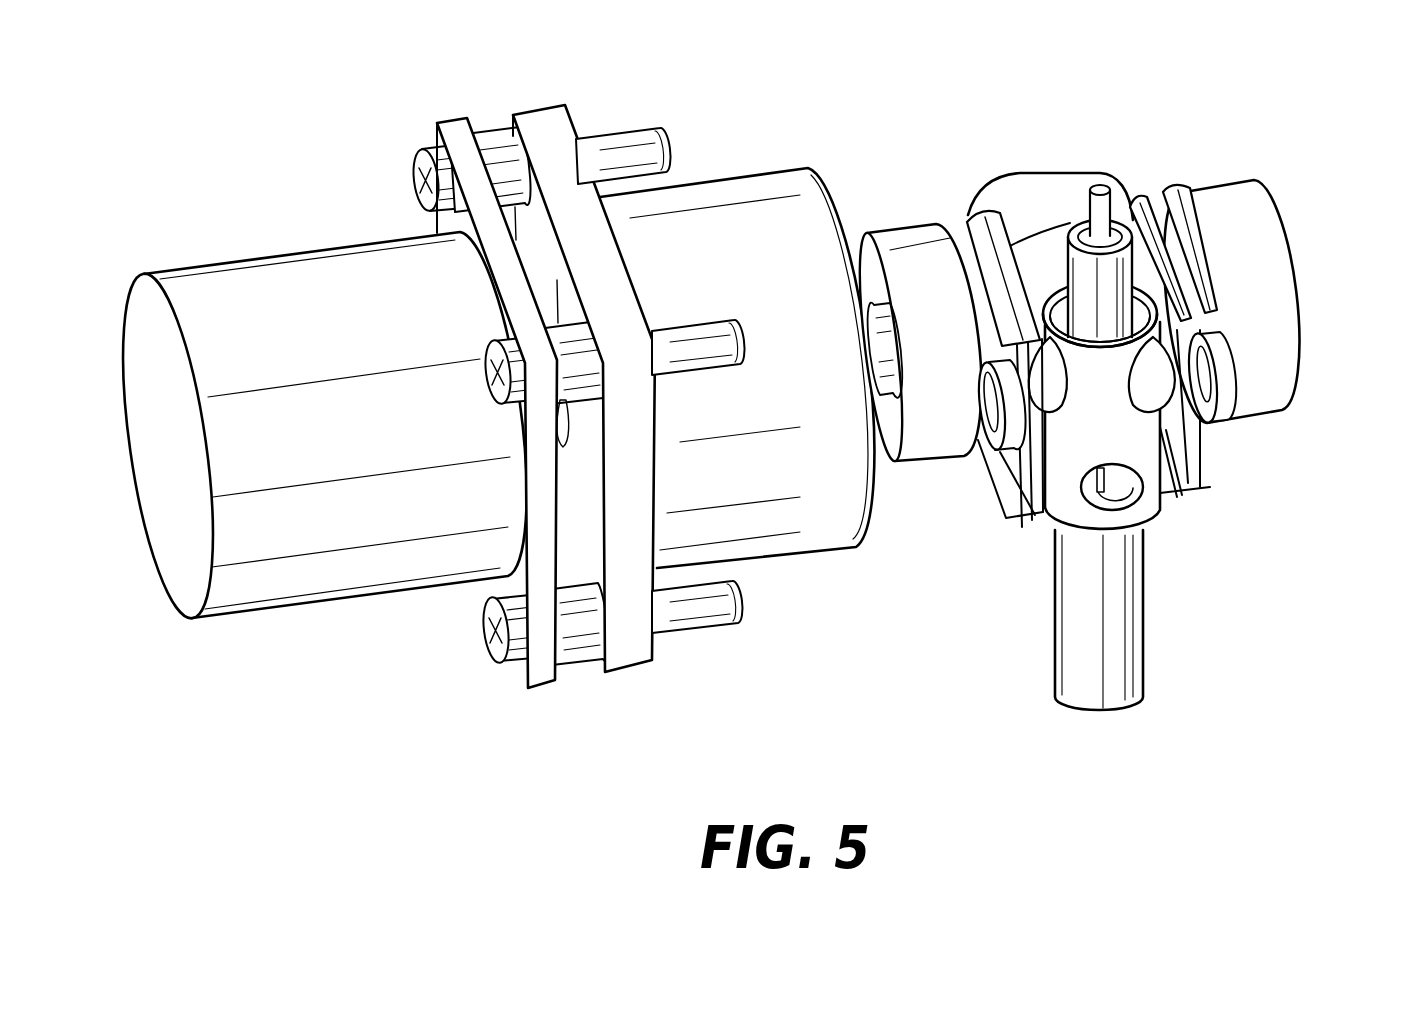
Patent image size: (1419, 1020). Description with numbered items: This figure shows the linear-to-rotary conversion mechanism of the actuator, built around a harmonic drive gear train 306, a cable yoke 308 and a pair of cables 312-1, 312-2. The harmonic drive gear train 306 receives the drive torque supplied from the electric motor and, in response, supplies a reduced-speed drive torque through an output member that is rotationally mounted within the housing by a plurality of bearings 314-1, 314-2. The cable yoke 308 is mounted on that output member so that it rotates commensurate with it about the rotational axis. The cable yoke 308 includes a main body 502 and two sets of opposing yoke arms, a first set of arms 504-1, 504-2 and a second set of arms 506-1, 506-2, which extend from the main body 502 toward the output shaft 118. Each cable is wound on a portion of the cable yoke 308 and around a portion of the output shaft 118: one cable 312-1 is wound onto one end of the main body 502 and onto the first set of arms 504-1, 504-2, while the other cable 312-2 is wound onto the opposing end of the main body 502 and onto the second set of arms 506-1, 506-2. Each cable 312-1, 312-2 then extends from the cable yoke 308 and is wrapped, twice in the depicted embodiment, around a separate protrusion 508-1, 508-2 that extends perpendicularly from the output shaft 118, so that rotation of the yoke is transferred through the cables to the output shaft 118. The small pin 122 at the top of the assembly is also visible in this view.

The harmonic drive gear train 306 is at (728, 180).
The bearing 314-1 is at (907, 238).
The arm of first set of yoke arms 504-1 is at (968, 290).
The cable yoke 308 is at (1000, 187).
The main body 502 is at (1043, 248).
The pin 122 is at (1112, 205).
The bearing 314-2 is at (1213, 193).
The arm of second set of yoke arms 506-1 is at (1188, 258).
The protrusion 508-2 is at (1210, 397).
The cable 312-2 is at (1203, 443).
The arm of second set of yoke arms 506-2 is at (1210, 483).
The output shaft 118 is at (1141, 643).
The cable 312-1 is at (1020, 500).
The arm of first set of yoke arms 504-2 is at (990, 485).
The protrusion 508-1 is at (978, 445).